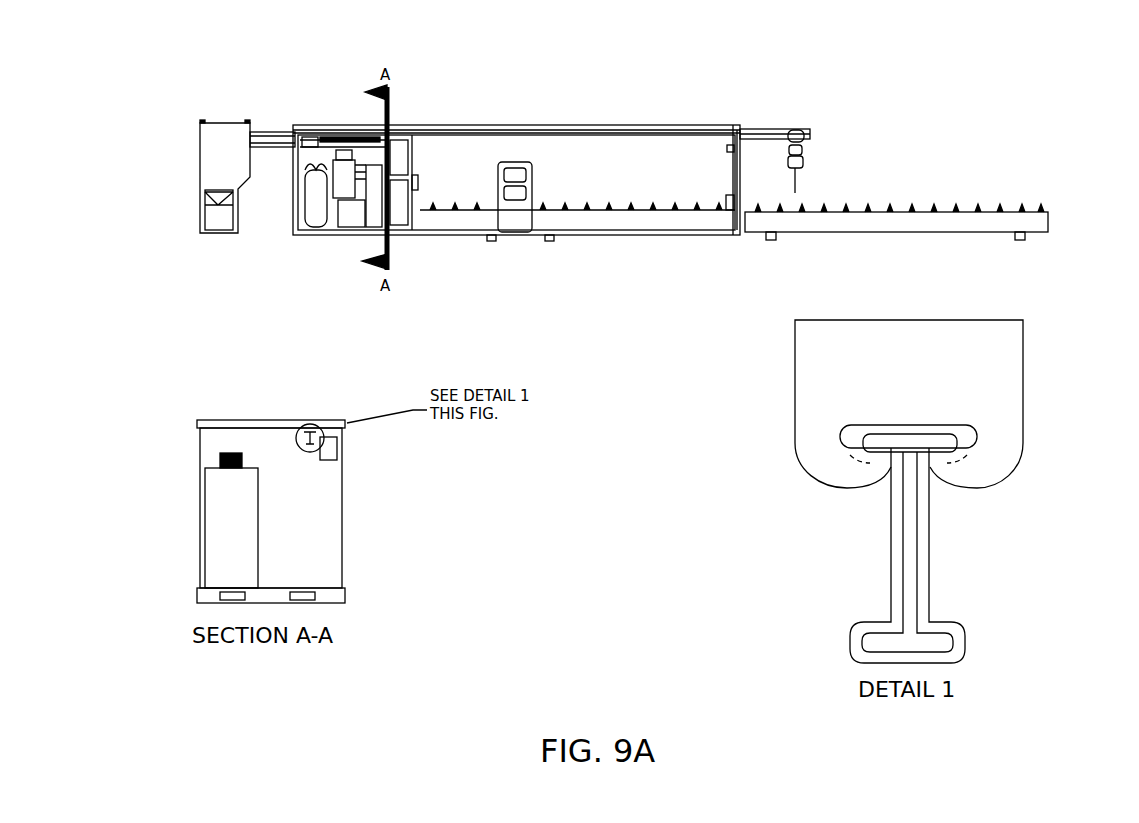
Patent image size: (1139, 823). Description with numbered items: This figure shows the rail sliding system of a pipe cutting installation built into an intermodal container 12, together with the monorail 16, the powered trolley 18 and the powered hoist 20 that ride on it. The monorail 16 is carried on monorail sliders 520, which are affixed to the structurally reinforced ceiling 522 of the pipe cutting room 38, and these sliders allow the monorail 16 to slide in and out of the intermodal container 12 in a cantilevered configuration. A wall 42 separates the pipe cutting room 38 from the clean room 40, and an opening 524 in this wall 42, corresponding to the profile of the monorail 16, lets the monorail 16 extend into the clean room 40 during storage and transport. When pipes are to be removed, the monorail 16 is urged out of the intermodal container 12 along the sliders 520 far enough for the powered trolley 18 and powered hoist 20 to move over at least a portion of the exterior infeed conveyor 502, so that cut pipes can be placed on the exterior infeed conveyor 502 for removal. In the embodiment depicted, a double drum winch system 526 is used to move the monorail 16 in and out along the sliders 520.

The intermodal container 12 is at (590, 240).
The monorail 16 is at (772, 127).
The powered trolley 18 is at (802, 131).
The powered hoist 20 is at (805, 151).
The pipe cutting room 38 is at (647, 167).
The clean room 40 is at (323, 157).
The wall 42 is at (388, 127).
The exterior infeed conveyor 502 is at (880, 210).
The monorail sliders 520 is at (562, 130).
The structurally reinforced ceiling 522 is at (706, 128).
The opening 524 is at (932, 553).
The double drum winch system 526 is at (370, 128).